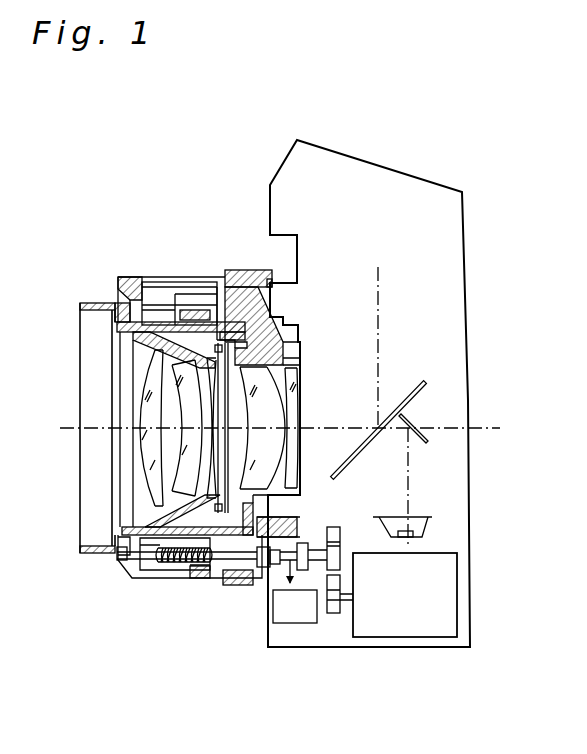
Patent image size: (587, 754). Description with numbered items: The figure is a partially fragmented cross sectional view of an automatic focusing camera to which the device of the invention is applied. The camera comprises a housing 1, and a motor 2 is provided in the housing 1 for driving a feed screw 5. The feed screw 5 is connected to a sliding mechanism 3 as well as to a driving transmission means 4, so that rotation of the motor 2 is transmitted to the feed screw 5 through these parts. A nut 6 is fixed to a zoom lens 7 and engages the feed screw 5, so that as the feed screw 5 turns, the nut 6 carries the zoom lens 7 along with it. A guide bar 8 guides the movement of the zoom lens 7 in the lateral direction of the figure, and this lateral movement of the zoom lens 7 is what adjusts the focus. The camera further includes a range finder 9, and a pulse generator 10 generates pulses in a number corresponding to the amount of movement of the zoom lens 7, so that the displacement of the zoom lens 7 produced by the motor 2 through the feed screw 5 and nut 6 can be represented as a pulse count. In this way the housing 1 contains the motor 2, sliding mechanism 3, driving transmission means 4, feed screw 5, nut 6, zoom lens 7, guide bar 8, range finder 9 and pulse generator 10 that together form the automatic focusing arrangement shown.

The housing 1 is at (443, 286).
The motor 2 is at (430, 610).
The sliding mechanism 3 is at (332, 614).
The driving transmission means 4 is at (262, 585).
The feed screw 5 is at (172, 565).
The nut 6 is at (147, 568).
The zoom lens 7 is at (128, 450).
The guide bar 8 is at (161, 300).
The range finder 9 is at (430, 523).
The pulse generator 10 is at (289, 612).